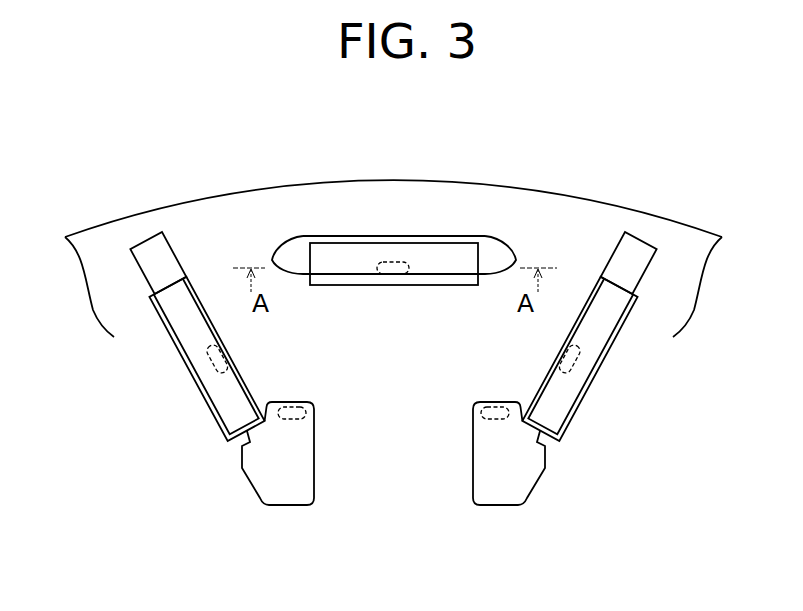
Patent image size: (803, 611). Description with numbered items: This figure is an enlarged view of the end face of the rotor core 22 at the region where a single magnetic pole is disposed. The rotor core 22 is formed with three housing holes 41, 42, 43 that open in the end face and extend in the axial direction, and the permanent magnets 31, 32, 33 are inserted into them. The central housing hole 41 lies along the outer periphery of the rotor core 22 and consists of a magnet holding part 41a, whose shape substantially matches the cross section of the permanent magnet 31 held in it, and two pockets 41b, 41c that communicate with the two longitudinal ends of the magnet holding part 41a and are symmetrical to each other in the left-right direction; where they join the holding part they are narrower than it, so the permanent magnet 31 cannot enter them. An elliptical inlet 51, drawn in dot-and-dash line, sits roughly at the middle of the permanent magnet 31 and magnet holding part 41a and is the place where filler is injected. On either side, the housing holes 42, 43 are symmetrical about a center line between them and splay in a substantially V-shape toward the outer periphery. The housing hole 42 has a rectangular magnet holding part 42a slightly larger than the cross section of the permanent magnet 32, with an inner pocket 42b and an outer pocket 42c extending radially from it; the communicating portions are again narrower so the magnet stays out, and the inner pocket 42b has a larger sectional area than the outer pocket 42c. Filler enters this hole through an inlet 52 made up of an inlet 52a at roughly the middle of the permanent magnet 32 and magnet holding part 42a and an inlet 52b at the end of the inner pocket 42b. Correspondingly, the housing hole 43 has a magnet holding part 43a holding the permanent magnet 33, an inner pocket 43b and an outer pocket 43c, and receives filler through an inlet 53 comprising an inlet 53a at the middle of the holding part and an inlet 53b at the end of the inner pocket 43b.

The rotor core 22 is at (578, 213).
The housing hole 41 is at (399, 223).
The magnet holding part 41a is at (413, 243).
The pocket 41b is at (537, 241).
The pocket 41c is at (293, 254).
The permanent magnet 31 is at (342, 255).
The inlet 51 is at (419, 280).
The housing hole 42 is at (565, 415).
The magnet holding part 42a is at (607, 352).
The inner pocket 42b is at (518, 478).
The outer pocket 42c is at (640, 268).
The permanent magnet 32 is at (558, 400).
The inlet 52 is at (480, 380).
The inlet 52a is at (563, 353).
The inlet 52b is at (491, 400).
The housing hole 43 is at (213, 397).
The magnet holding part 43a is at (188, 370).
The inner pocket 43b is at (297, 482).
The outer pocket 43c is at (147, 268).
The permanent magnet 33 is at (232, 405).
The inlet 53 is at (301, 367).
The inlet 53a is at (223, 358).
The inlet 53b is at (291, 412).